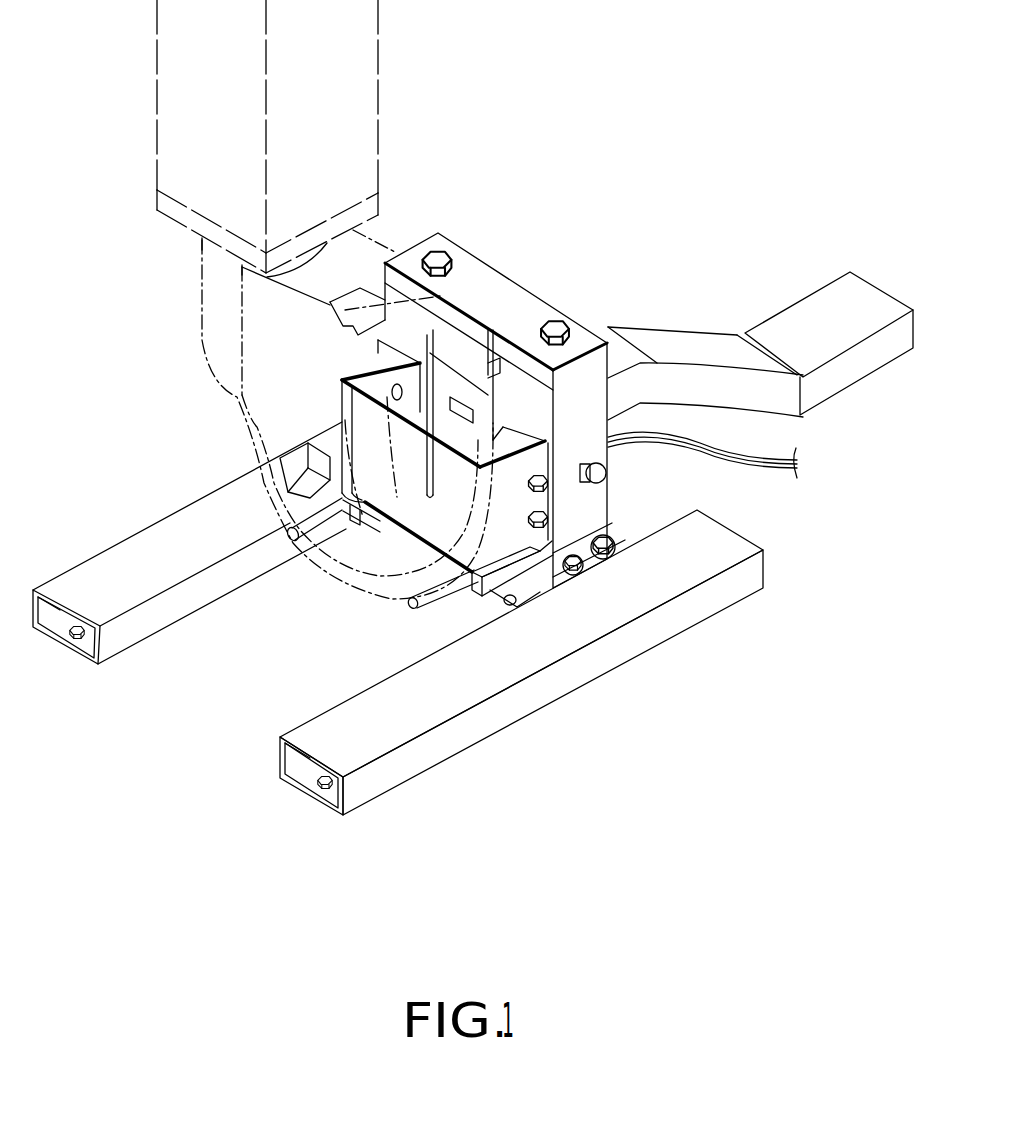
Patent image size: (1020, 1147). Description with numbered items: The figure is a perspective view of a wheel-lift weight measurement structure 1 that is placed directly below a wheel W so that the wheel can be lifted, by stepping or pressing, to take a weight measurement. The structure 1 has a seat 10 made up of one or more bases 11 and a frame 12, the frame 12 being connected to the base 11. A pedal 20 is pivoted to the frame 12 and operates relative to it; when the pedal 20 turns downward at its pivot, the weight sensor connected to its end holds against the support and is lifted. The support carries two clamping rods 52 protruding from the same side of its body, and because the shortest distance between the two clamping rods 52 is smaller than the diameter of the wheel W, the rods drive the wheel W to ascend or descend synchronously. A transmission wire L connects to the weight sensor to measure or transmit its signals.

The wheel-lift weight measurement structure 1 is at (134, 324).
The seat 10 is at (528, 776).
The base 11 is at (143, 527).
The frame 12 is at (477, 273).
The pedal 20 is at (837, 307).
The clamping rod 52 is at (430, 610).
The wheel W is at (238, 418).
The transmission wire L is at (720, 463).